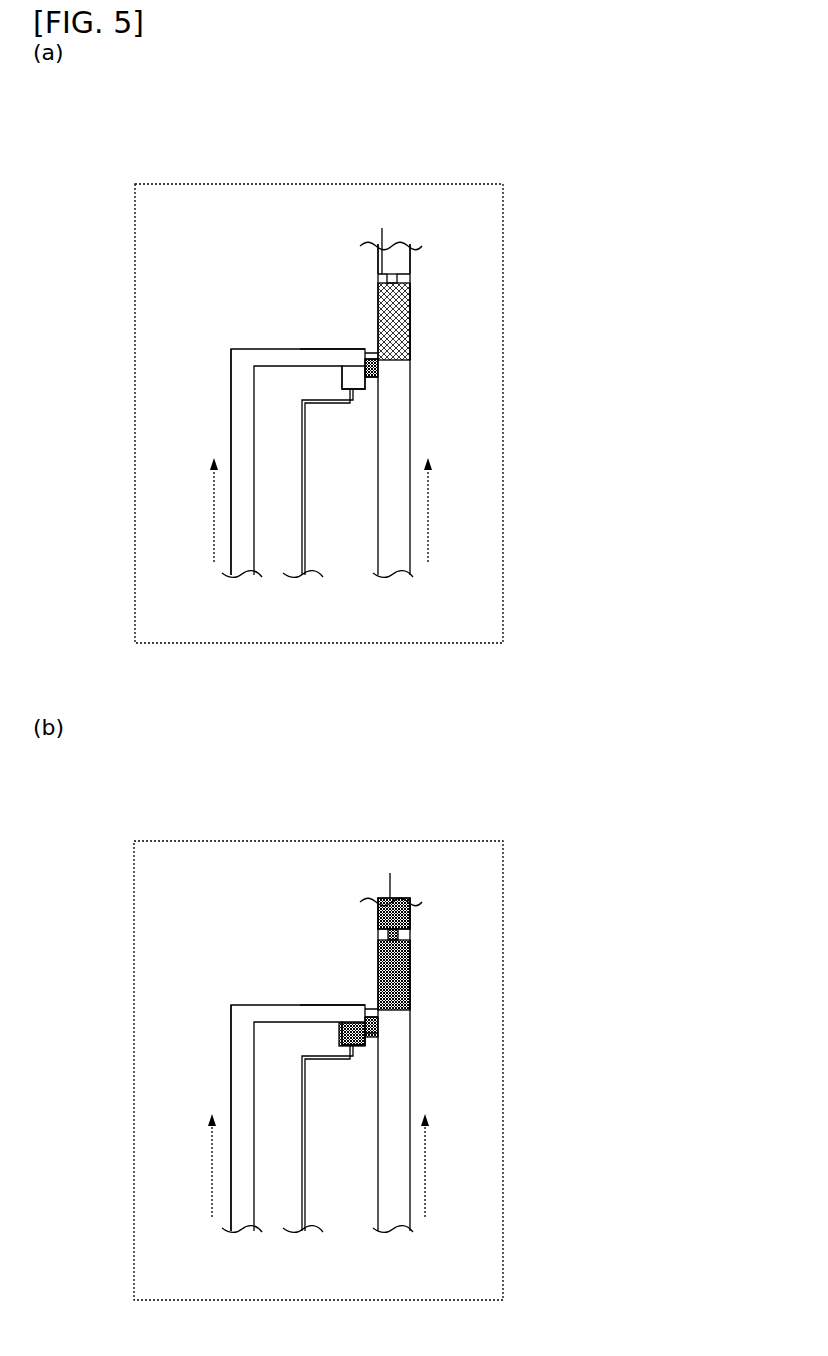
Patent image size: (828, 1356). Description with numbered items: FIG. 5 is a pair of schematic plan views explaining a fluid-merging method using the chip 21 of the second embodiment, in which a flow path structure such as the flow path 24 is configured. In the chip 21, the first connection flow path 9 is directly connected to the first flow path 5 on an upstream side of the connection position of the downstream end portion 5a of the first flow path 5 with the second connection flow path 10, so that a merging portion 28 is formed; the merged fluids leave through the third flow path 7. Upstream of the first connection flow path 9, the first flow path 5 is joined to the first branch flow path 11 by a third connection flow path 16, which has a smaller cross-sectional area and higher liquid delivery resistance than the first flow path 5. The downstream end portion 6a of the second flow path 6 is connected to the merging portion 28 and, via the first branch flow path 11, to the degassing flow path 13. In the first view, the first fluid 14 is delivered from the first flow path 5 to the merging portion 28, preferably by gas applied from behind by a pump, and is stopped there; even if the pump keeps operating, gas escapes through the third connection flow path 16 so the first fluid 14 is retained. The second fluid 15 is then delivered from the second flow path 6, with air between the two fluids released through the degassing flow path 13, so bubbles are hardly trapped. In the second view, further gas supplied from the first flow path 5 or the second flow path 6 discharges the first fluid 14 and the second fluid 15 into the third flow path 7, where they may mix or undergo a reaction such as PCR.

The chip 21 is at (188, 180).
The flow path 24 is at (222, 368).
The second flow path 6 is at (230, 432).
The downstream end portion of the second flow path 6a is at (352, 347).
The first branch flow path 11 is at (342, 378).
The degassing flow path 13 is at (305, 473).
The first flow path 5 is at (377, 503).
The downstream end portion of the first flow path 5a is at (410, 299).
The third flow path 7 is at (393, 258).
The second connection flow path 10 is at (397, 280).
The merging portion 28 is at (421, 287).
The first connection flow path 9 is at (373, 357).
The first fluid 14 is at (387, 552).
The third connection flow path 16 is at (378, 377).
The second fluid 15 is at (378, 916).